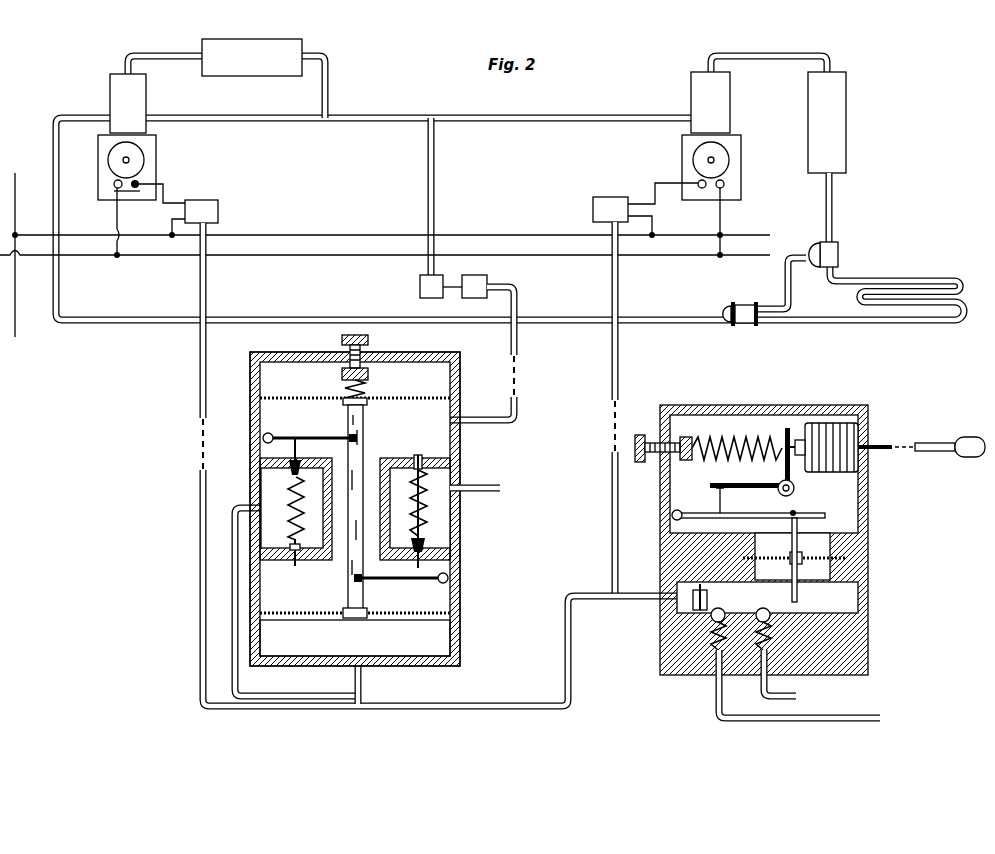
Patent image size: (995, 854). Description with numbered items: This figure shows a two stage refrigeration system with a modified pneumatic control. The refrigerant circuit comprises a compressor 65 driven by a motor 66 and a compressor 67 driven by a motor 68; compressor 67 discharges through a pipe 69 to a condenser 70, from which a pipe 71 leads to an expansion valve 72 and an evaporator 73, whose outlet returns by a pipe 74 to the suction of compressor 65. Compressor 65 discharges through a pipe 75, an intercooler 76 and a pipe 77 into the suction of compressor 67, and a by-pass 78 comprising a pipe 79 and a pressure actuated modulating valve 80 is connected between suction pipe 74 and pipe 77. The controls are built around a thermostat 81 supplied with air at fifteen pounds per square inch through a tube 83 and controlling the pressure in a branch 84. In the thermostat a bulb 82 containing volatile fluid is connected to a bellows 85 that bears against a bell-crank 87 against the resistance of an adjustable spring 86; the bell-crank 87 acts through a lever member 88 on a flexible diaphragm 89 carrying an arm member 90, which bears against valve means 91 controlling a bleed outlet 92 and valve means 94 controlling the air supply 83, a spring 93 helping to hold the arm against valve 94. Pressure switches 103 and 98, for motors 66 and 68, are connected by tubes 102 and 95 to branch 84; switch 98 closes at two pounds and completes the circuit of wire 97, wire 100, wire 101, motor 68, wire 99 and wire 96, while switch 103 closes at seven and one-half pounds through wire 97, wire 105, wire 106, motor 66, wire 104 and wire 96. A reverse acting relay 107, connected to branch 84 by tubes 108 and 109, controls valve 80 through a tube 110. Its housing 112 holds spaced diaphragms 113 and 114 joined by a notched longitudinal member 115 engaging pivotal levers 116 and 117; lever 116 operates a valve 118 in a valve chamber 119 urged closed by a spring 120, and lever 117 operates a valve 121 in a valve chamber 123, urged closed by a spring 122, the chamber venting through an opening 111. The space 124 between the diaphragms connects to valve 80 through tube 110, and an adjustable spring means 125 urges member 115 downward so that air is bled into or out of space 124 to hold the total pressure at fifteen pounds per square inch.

The compressor 65 is at (142, 113).
The motor 66 is at (146, 160).
The compressor 67 is at (716, 105).
The motor 68 is at (729, 160).
The pipe 69 is at (773, 55).
The condenser 70 is at (828, 115).
The pipe 71 is at (833, 205).
The expansion valve 72 is at (838, 252).
The evaporator 73 is at (914, 281).
The pipe 74 is at (586, 322).
The pipe 75 is at (161, 55).
The intercooler 76 is at (253, 44).
The pipe 77 is at (458, 118).
The by-pass 78 is at (423, 205).
The pipe 79 is at (436, 220).
The modulating valve 80 is at (418, 287).
The thermostat 81 is at (812, 397).
The bulb 82 is at (968, 440).
The tube 83 is at (816, 720).
The branch 84 is at (509, 709).
The bellows 85 is at (840, 450).
The spring 86 is at (712, 434).
The bell-crank 87 is at (782, 471).
The lever member 88 is at (812, 512).
The diaphragm 89 is at (772, 558).
The arm member 90 is at (792, 600).
The valve means 91 is at (795, 617).
The bleed outlet 92 is at (785, 694).
The spring 93 is at (708, 596).
The valve means 94 is at (683, 609).
The tube 95 is at (611, 538).
The wire 96 is at (356, 257).
The wire 97 is at (340, 233).
The pressure switch 98 is at (604, 197).
The wire 99 is at (724, 215).
The wire 100 is at (654, 217).
The wire 101 is at (655, 182).
The tube 102 is at (199, 609).
The pressure switch 103 is at (218, 210).
The wire 104 is at (112, 216).
The wire 105 is at (171, 226).
The wire 106 is at (168, 195).
The reverse acting relay 107 is at (462, 582).
The tube 108 is at (363, 684).
The tube 109 is at (232, 657).
The tube 110 is at (510, 345).
The opening 111 is at (470, 487).
The housing 112 is at (461, 632).
The diaphragm 113 is at (294, 397).
The diaphragm 114 is at (430, 616).
The longitudinal member 115 is at (347, 414).
The lever 116 is at (300, 441).
The lever 117 is at (392, 584).
The valve 118 is at (290, 462).
The valve chamber 119 is at (275, 490).
The spring 120 is at (312, 550).
The valve 121 is at (432, 548).
The spring 122 is at (440, 523).
The valve chamber 123 is at (440, 486).
The space 124 is at (438, 425).
The spring means 125 is at (368, 392).